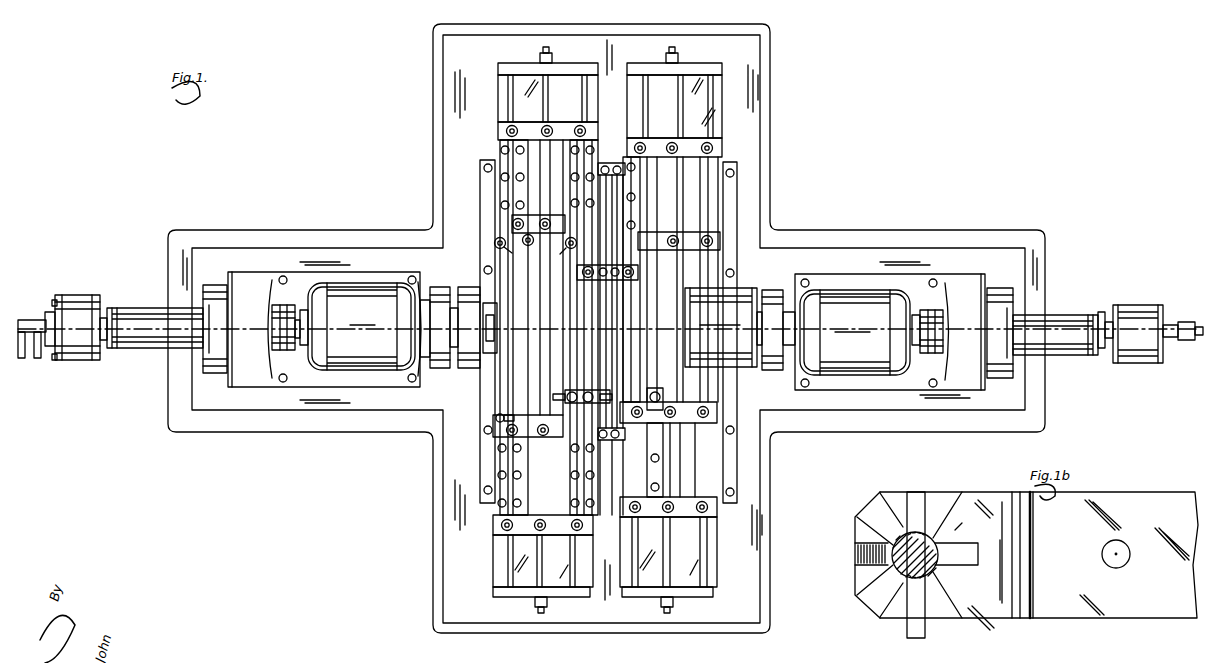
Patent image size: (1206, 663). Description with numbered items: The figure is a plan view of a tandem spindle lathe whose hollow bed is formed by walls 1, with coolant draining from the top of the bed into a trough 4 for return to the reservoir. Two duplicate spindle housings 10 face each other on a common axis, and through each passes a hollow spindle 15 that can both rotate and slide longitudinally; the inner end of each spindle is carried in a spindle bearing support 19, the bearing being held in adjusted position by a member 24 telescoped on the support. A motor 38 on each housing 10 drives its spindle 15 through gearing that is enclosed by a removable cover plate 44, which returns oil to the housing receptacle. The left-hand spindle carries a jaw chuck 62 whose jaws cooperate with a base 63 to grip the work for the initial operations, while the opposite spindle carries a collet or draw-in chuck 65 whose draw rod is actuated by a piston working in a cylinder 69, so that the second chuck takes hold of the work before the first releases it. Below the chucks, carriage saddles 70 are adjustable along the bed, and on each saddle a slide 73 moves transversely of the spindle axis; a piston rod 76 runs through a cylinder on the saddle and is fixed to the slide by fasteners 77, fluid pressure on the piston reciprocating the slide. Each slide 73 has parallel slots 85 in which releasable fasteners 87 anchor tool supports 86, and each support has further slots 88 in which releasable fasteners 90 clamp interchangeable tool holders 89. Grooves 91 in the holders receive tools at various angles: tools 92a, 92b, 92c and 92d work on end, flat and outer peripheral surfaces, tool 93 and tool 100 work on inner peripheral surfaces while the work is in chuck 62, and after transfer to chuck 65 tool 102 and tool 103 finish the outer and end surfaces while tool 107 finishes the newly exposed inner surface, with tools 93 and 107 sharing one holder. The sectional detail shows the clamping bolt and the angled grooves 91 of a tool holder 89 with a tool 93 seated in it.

In FIG. 1, the walls 1 is at (320, 400).
In FIG. 1, the trough 4 is at (245, 432).
In FIG. 1, the spindle housings 10 is at (885, 402).
In FIG. 1, the hollow spindle 15 is at (147, 340).
In FIG. 1, the spindle bearing support 19 is at (428, 372).
In FIG. 1, the member 24 is at (443, 290).
In FIG. 1, the motor 38 is at (350, 362).
In FIG. 1, the removable cover plate 44 is at (215, 365).
In FIG. 1, the chuck 62 is at (499, 326).
In FIG. 1, the base 63 is at (468, 370).
In FIG. 1, the chuck 65 is at (728, 302).
In FIG. 1, the cylinder 69 is at (1138, 306).
In FIG. 1, the carriage saddles 70 is at (482, 222).
In FIG. 1, the slide 73 is at (523, 108).
In FIG. 1, the piston rod 76 is at (540, 54).
In FIG. 1, the fasteners 77 is at (507, 63).
In FIG. 1, the slots 85 is at (512, 95).
In FIG. 1, the tool supports 86 is at (500, 131).
In FIG. 1, the releasable fasteners 87 is at (720, 148).
In FIG. 1, the slots 88 is at (520, 190).
In FIG. 1, the tool holders 89 is at (505, 220).
In FIG. 1B, the tool holders 89 is at (1110, 503).
In FIG. 1, the releasable fasteners 90 is at (518, 173).
In FIG. 1B, the grooves 91 is at (921, 494).
In FIG. 1, the tool 92a is at (585, 280).
In FIG. 1, the tool 92b is at (583, 258).
In FIG. 1, the tool 92c is at (494, 235).
In FIG. 1, the tool 92d is at (528, 246).
In FIG. 1, the tool 93 is at (560, 394).
In FIG. 1B, the tool 93 is at (908, 630).
In FIG. 1, the tool 100 is at (505, 416).
In FIG. 1, the tool 102 is at (655, 392).
In FIG. 1, the tool 103 is at (633, 278).
In FIG. 1, the tool 107 is at (608, 394).